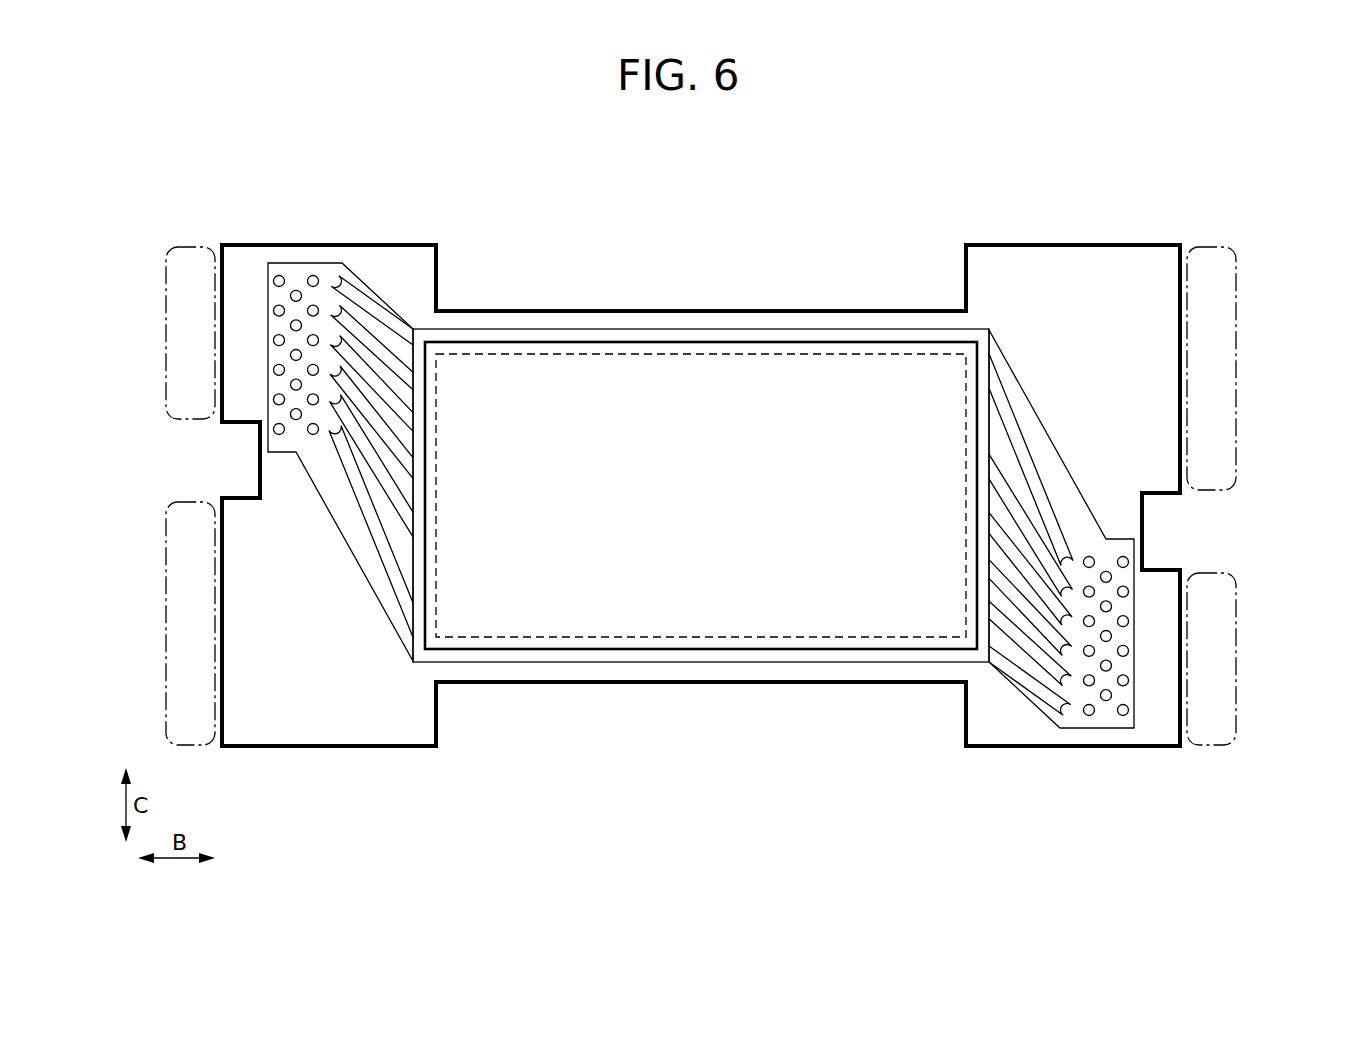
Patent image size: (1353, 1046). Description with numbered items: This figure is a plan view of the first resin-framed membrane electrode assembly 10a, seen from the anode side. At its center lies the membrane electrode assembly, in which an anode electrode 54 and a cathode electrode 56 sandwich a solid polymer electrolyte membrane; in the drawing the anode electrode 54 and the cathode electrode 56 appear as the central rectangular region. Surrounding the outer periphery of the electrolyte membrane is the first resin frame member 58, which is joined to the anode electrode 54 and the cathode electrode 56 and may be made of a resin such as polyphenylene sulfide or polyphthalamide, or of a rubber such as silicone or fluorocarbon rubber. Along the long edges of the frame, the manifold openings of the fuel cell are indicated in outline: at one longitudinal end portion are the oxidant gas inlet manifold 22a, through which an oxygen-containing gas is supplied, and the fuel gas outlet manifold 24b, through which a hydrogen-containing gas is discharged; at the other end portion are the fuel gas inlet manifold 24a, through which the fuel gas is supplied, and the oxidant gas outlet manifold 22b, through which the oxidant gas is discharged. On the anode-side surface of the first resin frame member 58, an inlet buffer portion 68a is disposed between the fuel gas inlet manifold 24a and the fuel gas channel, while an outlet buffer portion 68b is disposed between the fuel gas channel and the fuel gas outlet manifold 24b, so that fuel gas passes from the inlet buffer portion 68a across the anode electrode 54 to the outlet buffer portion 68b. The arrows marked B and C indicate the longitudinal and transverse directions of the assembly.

The first resin-framed membrane electrode assembly 10a is at (777, 127).
The oxidant gas inlet manifold 22a is at (1218, 353).
The oxidant gas outlet manifold 22b is at (180, 682).
The fuel gas inlet manifold 24a is at (183, 353).
The fuel gas outlet manifold 24b is at (1218, 682).
The anode electrode 54 is at (540, 373).
The cathode electrode 56 is at (613, 373).
The first resin frame member 58 is at (990, 240).
The inlet buffer portion 68a is at (378, 268).
The outlet buffer portion 68b is at (1028, 722).